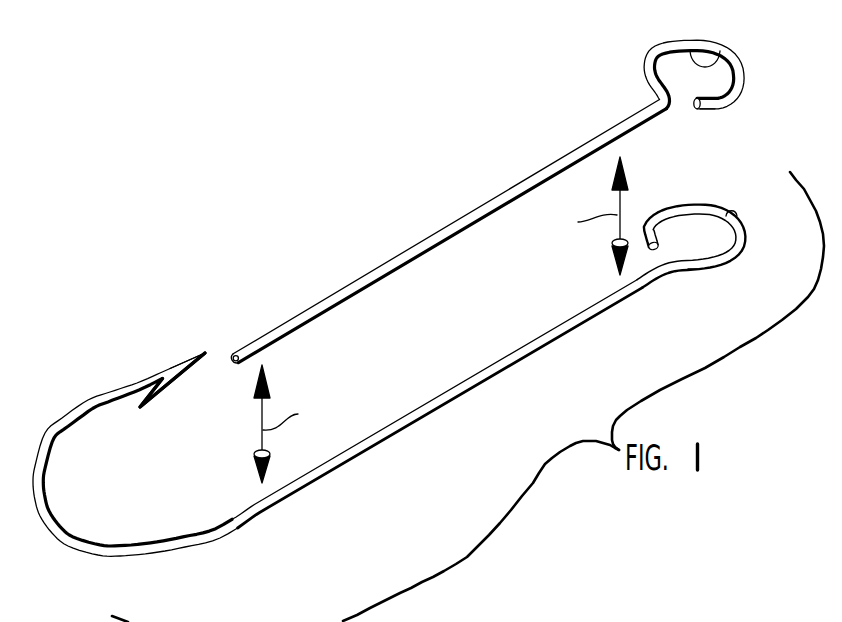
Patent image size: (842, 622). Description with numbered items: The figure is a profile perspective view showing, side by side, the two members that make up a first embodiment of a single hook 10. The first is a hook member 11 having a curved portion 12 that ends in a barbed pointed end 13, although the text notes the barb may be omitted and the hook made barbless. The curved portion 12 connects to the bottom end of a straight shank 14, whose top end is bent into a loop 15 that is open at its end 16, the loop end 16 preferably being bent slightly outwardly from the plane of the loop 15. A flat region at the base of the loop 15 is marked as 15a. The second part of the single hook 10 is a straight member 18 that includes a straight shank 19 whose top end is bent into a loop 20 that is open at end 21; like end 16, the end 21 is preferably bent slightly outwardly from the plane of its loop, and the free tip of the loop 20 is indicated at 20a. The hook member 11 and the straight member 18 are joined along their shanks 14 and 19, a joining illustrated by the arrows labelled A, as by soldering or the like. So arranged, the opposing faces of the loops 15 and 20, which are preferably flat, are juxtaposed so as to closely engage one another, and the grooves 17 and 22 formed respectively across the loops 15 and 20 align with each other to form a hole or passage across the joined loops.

The single hook 10 is at (485, 545).
The hook member 11 is at (418, 299).
The curved portion 12 is at (83, 538).
The barbed pointed end 13 is at (157, 380).
The straight shank 14 is at (485, 379).
The loop 15 is at (742, 252).
The flat portion of clasp loop 15a is at (708, 266).
The loop end 16 is at (648, 242).
The groove 17 is at (730, 213).
The straight member 18 is at (517, 184).
The straight shank 19 is at (455, 222).
The loop 20 is at (723, 84).
The coil end 20a is at (739, 95).
The loop end 21 is at (694, 107).
The groove 22 is at (695, 50).